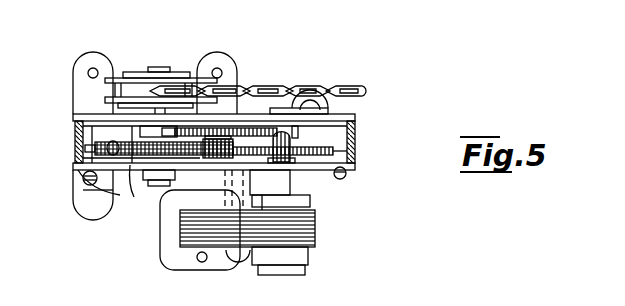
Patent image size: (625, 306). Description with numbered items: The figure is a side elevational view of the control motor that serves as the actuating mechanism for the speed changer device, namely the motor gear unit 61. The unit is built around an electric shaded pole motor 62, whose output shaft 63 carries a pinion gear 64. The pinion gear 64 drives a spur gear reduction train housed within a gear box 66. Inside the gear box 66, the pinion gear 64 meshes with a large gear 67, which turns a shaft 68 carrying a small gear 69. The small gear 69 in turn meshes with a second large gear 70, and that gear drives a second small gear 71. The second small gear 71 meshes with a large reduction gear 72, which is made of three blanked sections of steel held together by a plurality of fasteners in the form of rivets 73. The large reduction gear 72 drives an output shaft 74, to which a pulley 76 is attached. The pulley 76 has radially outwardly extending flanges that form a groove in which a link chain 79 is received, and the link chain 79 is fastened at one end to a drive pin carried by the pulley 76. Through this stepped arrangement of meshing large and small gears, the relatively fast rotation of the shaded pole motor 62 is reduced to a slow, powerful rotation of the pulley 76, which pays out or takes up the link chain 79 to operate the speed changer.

The motor gear unit 61 is at (356, 189).
The shaded pole motor 62 is at (313, 233).
The output shaft 63 is at (282, 157).
The pinion gear 64 is at (284, 153).
The gear box 66 is at (328, 112).
The large gear 67 is at (331, 152).
The shaft 68 is at (296, 136).
The small gear 69 is at (298, 112).
The second large gear 70 is at (252, 88).
The second small gear 71 is at (143, 126).
The large reduction gear 72 is at (126, 192).
The rivets 73 is at (110, 143).
The output shaft 74 is at (160, 67).
The pulley 76 is at (117, 78).
The link chain 79 is at (353, 85).